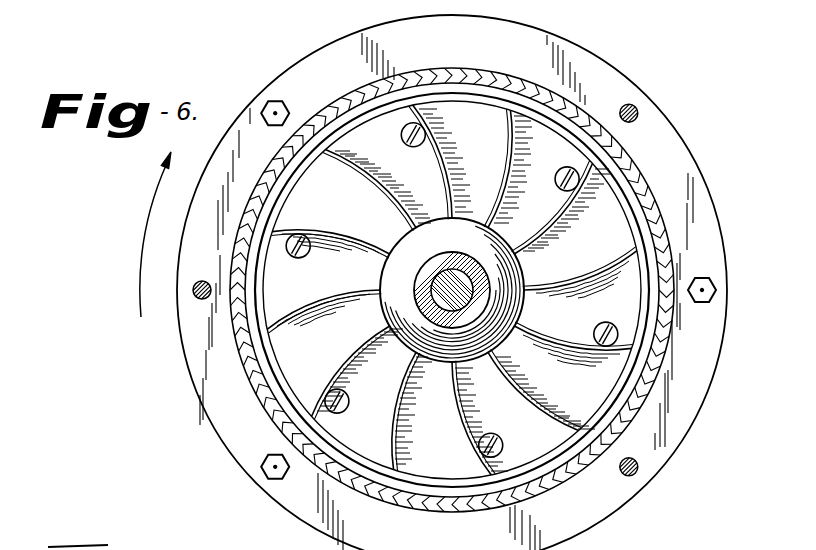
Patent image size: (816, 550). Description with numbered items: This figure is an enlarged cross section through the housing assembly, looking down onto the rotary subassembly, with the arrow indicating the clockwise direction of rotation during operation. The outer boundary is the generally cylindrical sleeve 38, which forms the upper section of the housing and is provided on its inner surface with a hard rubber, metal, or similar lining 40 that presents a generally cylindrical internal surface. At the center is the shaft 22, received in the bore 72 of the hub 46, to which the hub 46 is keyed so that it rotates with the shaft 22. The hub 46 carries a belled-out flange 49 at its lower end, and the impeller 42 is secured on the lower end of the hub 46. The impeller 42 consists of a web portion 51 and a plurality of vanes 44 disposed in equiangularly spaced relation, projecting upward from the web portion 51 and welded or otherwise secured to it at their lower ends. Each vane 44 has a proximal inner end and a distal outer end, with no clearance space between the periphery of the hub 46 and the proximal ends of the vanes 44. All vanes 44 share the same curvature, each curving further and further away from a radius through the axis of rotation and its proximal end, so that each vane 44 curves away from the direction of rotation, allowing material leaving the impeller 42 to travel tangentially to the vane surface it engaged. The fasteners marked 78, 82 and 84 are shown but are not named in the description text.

The shaft 22 is at (453, 292).
The cylindrical sleeve 38 is at (688, 418).
The lining 40 is at (474, 512).
The impeller 42 is at (623, 223).
The vanes 44 is at (580, 285).
The hub 46 is at (493, 258).
The belled-out flange 49 is at (441, 352).
The web portion 51 is at (588, 402).
The bore 72 is at (440, 272).
The screws 78 is at (310, 250).
The hex head bolts 82 is at (277, 100).
The bolts 84 is at (639, 112).